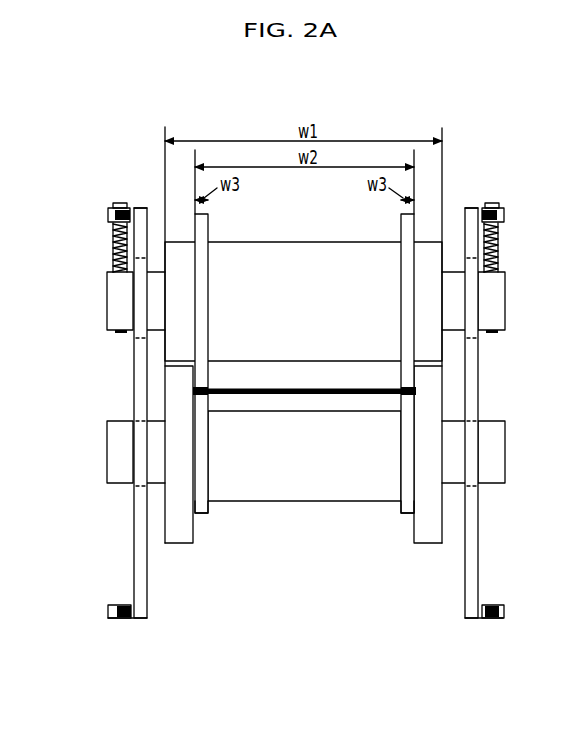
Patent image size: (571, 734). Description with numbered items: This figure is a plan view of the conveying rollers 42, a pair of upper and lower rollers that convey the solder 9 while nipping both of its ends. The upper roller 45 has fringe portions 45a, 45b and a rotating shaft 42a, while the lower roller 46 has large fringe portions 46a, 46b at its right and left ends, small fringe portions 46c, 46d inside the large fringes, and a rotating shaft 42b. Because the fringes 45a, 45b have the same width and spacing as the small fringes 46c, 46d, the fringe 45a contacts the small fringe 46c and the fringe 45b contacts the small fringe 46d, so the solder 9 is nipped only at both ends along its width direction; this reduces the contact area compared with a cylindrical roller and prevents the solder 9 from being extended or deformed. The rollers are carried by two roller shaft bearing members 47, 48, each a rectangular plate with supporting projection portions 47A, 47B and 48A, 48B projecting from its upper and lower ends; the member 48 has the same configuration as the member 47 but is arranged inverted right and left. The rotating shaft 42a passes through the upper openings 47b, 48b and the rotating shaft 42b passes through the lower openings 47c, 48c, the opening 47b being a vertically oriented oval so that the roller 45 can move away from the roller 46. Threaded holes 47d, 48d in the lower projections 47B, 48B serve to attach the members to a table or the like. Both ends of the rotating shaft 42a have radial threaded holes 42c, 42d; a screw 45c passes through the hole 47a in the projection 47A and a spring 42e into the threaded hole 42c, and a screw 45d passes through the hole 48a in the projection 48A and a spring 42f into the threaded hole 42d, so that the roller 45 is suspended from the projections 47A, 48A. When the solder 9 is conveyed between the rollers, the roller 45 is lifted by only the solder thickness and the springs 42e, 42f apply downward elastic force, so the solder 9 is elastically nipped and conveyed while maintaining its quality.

The conveying rollers 42 is at (112, 150).
The rotating shaft 42a is at (505, 323).
The rotating shaft 42b is at (482, 485).
The threaded hole 42c is at (112, 272).
The threaded hole 42d is at (499, 272).
The spring 42e is at (113, 264).
The spring 42f is at (498, 265).
The roller 45 is at (343, 241).
The fringe portion 45a is at (208, 328).
The fringe portion 45b is at (401, 328).
The screw 45c is at (122, 203).
The screw 45d is at (490, 203).
The roller 46 is at (342, 501).
The large fringe portion 46a is at (179, 543).
The large fringe portion 46b is at (425, 543).
The small fringe portion 46c is at (208, 510).
The small fringe portion 46d is at (401, 511).
The roller shaft bearing member 47 is at (148, 604).
The supporting projection portion 47A is at (134, 215).
The supporting projection portion 47B is at (110, 618).
The hole 47a is at (111, 211).
The opening 47b is at (133, 333).
The opening 47c is at (133, 487).
The threaded hole 47d is at (120, 606).
The roller shaft bearing member 48 is at (470, 604).
The supporting projection portion 48A is at (477, 209).
The supporting projection portion 48B is at (503, 618).
The hole 48a is at (519, 201).
The opening 48b is at (479, 336).
The opening 48c is at (480, 486).
The threaded hole 48d is at (497, 605).
The solder 9 is at (352, 389).